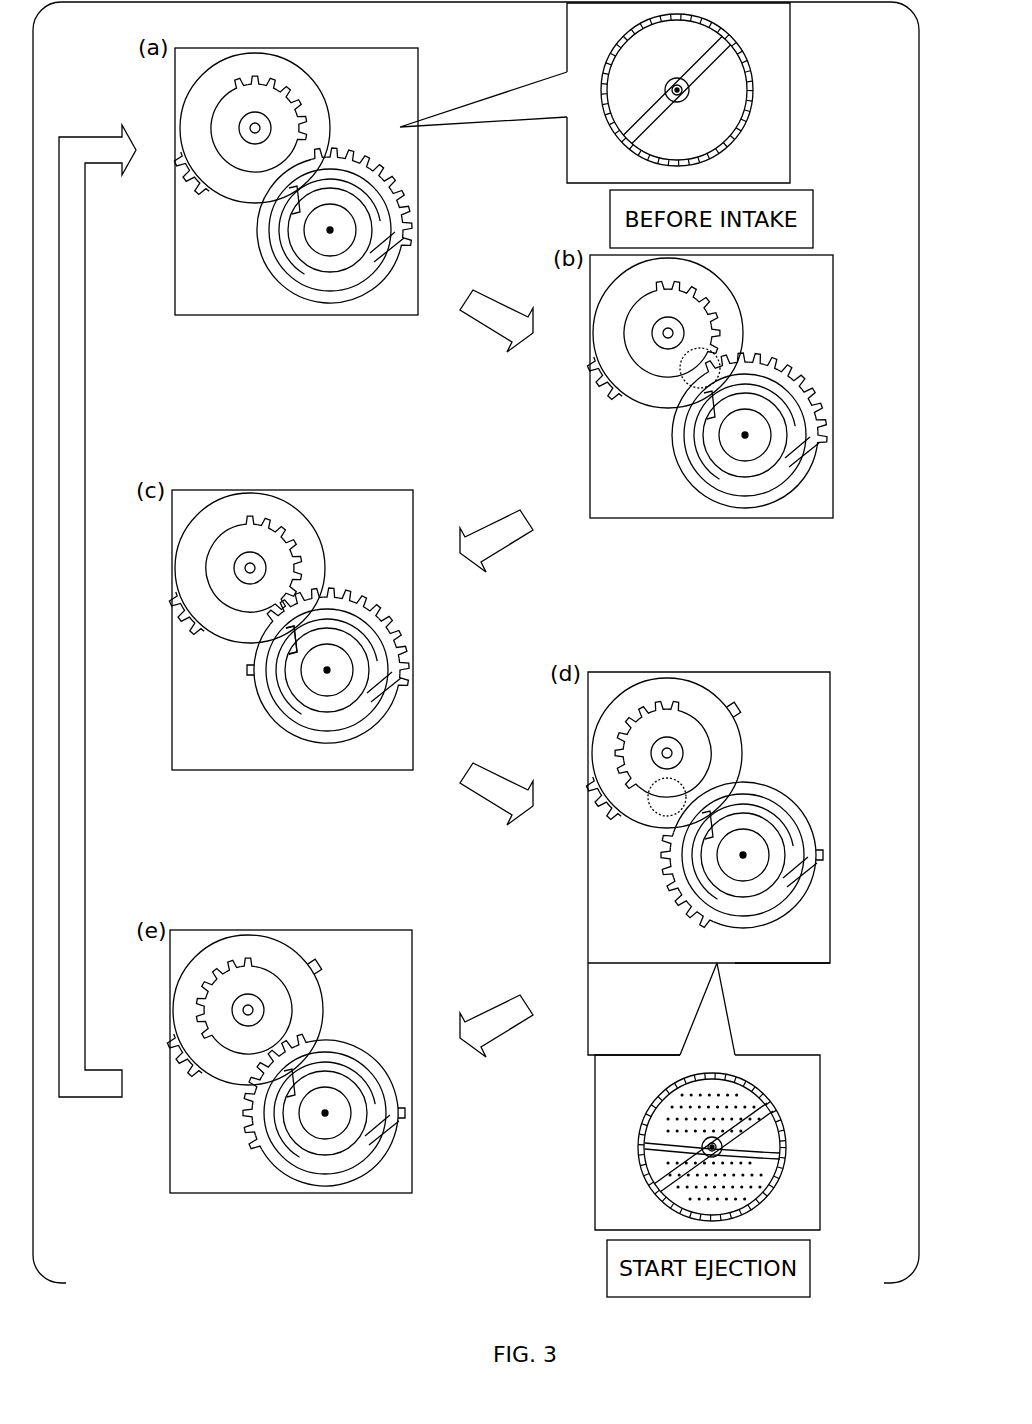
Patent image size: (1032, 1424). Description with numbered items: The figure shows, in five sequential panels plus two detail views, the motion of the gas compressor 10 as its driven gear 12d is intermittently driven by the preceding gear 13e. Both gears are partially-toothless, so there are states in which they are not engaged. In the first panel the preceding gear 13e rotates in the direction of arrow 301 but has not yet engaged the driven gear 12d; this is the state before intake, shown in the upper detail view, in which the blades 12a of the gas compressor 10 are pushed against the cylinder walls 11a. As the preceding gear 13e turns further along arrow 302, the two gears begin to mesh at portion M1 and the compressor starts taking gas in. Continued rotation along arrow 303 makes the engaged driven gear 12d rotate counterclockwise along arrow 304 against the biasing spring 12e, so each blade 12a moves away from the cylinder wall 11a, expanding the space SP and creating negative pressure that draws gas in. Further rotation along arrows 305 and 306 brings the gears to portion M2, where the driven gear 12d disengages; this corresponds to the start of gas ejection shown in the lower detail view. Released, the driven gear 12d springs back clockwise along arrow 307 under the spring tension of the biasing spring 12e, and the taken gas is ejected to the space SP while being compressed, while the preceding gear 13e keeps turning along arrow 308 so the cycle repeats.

The gas compressor 10 is at (597, 30).
The cylinder wall 11a is at (713, 77).
The blade 12a is at (735, 40).
The driven gear 12d is at (395, 292).
The biasing spring 12e is at (410, 230).
The preceding gear 13e is at (220, 80).
The arrow 301 is at (280, 140).
The arrow 302 is at (668, 362).
The arrow 303 is at (225, 598).
The arrow 304 is at (258, 652).
The arrow 305 is at (622, 743).
The arrow 306 is at (662, 872).
The arrow 307 is at (256, 1124).
The arrow 308 is at (206, 1004).
The portion M1 is at (720, 375).
The portion M2 is at (645, 822).
The space SP is at (735, 1098).